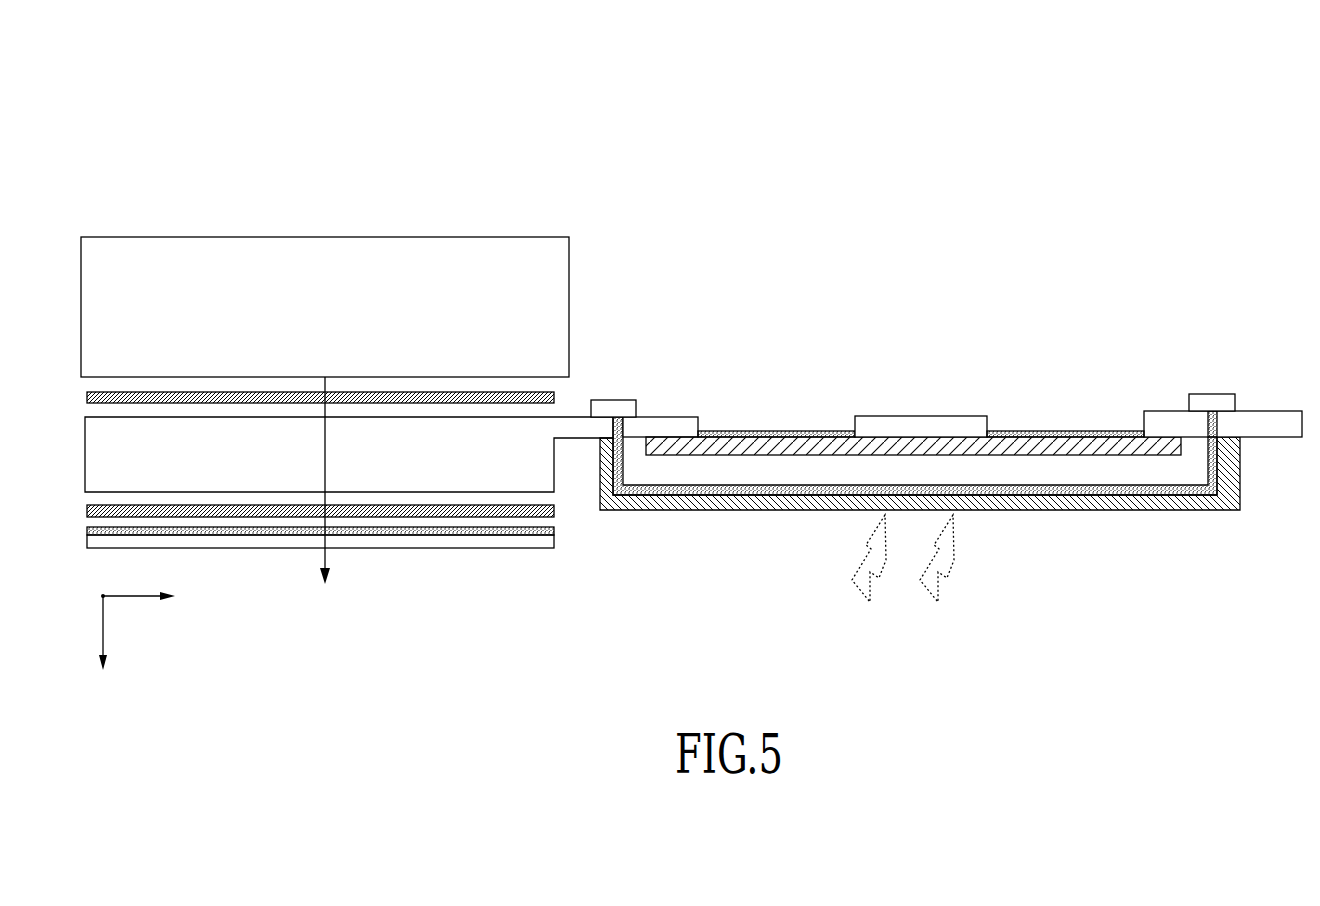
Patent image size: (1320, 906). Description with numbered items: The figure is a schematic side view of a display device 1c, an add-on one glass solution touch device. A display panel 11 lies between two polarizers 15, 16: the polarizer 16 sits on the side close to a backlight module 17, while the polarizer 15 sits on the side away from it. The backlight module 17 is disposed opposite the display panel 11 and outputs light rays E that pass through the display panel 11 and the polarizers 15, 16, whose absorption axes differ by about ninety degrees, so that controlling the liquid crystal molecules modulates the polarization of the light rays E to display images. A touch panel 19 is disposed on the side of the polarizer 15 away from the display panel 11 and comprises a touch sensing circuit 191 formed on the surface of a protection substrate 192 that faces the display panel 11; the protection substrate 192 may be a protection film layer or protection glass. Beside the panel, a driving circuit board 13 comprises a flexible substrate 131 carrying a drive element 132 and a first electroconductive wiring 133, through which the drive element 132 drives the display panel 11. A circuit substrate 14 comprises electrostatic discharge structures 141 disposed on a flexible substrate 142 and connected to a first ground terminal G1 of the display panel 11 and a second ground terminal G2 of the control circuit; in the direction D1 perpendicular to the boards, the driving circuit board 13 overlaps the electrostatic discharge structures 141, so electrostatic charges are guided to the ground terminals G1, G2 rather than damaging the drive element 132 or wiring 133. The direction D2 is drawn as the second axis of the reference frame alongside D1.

The display device 1c is at (150, 88).
The backlight module 17 is at (90, 315).
The polarizer 16 is at (87, 396).
The display panel 11 is at (85, 451).
The polarizer 15 is at (87, 509).
The touch panel 19 is at (320, 589).
The touch sensing circuit 191 is at (462, 533).
The protection substrate 192 is at (477, 608).
The driving circuit board 13 is at (921, 378).
The flexible substrate 131 is at (822, 430).
The drive element 132 is at (940, 427).
The first electroconductive wiring 133 is at (1020, 430).
The circuit substrate 14 is at (920, 507).
The electrostatic discharge structure 141 is at (1155, 562).
The flexible substrate 142 is at (1113, 505).
The first ground terminal G1 is at (622, 405).
The second ground terminal G2 is at (1219, 400).
The light rays E is at (325, 497).
The projection direction D1 is at (106, 648).
The second direction D2 is at (155, 597).